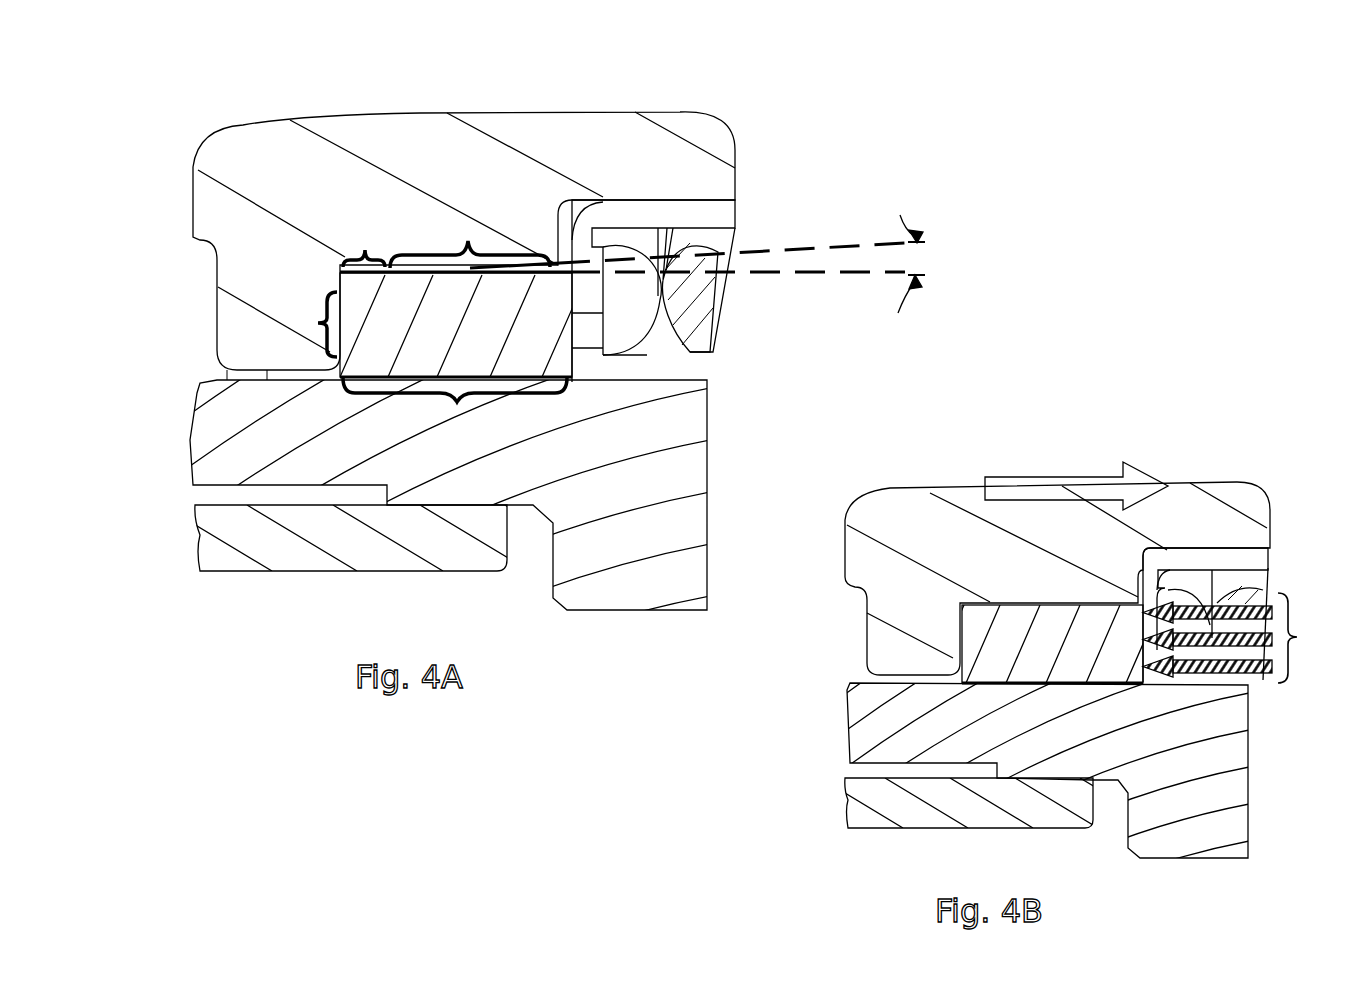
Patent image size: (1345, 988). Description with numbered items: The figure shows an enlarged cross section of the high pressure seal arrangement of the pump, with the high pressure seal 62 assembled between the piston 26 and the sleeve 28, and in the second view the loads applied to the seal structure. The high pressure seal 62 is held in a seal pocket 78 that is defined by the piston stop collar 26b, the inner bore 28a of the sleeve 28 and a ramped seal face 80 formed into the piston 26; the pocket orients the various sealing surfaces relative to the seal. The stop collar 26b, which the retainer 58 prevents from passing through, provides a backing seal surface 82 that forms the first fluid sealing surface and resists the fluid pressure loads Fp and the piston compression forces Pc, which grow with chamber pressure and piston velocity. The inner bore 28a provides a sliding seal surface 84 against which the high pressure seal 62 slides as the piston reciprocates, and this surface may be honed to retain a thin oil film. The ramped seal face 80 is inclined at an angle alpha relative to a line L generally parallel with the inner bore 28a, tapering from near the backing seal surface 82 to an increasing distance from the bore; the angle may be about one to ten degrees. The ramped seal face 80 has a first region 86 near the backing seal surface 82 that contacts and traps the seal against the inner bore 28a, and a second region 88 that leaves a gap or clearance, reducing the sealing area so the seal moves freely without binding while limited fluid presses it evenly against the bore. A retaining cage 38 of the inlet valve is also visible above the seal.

In FIG. 4A, the piston 26 is at (687, 168).
In FIG. 4B, the piston 26 is at (1183, 512).
In FIG. 4A, the stop collar 26b is at (230, 322).
In FIG. 4A, the sleeve 28 is at (680, 467).
In FIG. 4B, the sleeve 28 is at (1212, 768).
In FIG. 4A, the inner bore 28a is at (641, 382).
In FIG. 4A, the retaining cage 38 is at (697, 215).
In FIG. 4B, the retaining cage 38 is at (1255, 558).
In FIG. 4A, the retainer 58 is at (283, 558).
In FIG. 4B, the retainer 58 is at (865, 792).
In FIG. 4A, the high pressure seal 62 is at (363, 353).
In FIG. 4B, the high pressure seal 62 is at (1000, 647).
In FIG. 4A, the seal pocket 78 is at (328, 222).
In FIG. 4A, the ramped seal face 80 is at (480, 273).
In FIG. 4A, the backing seal surface 82 is at (320, 323).
In FIG. 4A, the sliding seal surface 84 is at (457, 403).
In FIG. 4A, the first region 86 is at (366, 249).
In FIG. 4A, the second region 88 is at (468, 240).
In FIG. 4A, the line L is at (898, 270).
In FIG. 4A, the angle alpha is at (905, 250).
In FIG. 4B, the piston compression forces Pc is at (1076, 486).
In FIG. 4B, the fluid pressure loads Fp is at (1306, 638).